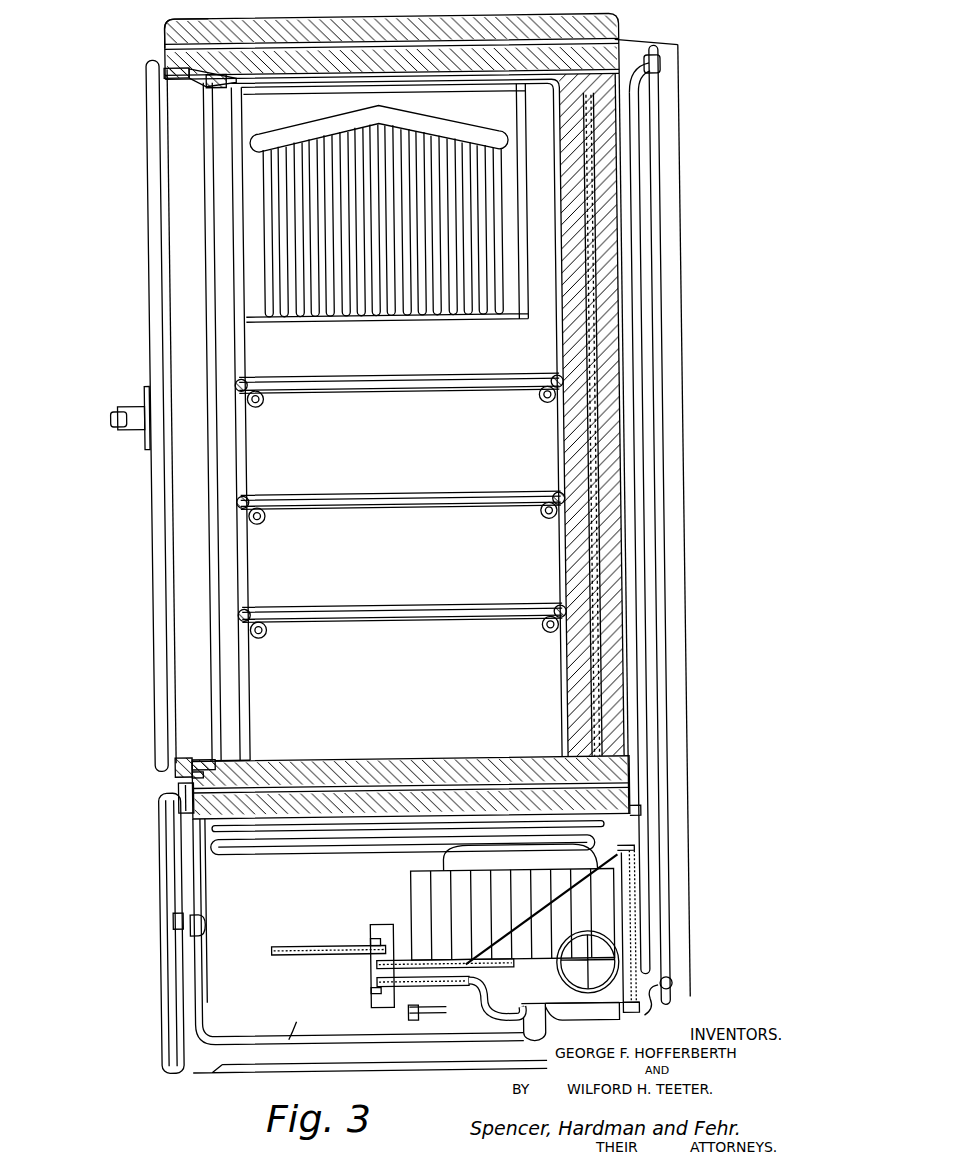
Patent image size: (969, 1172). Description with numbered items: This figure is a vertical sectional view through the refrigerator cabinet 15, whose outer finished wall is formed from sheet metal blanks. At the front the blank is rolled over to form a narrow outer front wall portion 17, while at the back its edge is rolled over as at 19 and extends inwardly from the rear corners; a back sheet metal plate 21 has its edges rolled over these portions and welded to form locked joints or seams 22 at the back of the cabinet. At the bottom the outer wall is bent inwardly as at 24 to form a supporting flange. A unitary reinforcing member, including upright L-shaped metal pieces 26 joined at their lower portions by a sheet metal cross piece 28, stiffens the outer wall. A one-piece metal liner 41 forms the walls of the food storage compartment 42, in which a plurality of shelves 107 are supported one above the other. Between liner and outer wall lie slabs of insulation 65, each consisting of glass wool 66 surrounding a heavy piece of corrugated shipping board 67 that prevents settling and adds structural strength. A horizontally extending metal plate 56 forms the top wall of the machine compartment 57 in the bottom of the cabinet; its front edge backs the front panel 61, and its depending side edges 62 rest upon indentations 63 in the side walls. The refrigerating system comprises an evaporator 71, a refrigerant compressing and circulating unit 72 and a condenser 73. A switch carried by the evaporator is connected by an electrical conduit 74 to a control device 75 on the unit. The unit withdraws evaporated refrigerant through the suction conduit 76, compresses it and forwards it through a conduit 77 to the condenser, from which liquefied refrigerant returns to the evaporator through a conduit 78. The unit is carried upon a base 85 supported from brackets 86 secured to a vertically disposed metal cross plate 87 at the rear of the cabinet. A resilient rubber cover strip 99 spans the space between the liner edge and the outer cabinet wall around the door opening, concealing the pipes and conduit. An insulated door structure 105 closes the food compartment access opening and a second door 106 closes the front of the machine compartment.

The refrigerator cabinet 15 is at (616, 413).
The narrow outer front wall portion 17 is at (171, 42).
The rolled back edge of blank 19 is at (626, 63).
The back sheet metal plate 21 is at (623, 165).
The locked joints or seams 22 is at (628, 109).
The supporting flange 24 is at (212, 1067).
The upright L-shaped metal pieces 26 is at (172, 30).
The sheet metal cross piece 28 is at (186, 803).
The one-piece metal liner 41 is at (564, 434).
The food storage compartment 42 is at (410, 456).
The horizontally extending metal plate 56 is at (246, 821).
The machine compartment 57 is at (229, 960).
The front panel 61 is at (170, 778).
The depending side edges 62 is at (289, 831).
The indentations 63 is at (343, 841).
The slabs of insulation 65 is at (609, 238).
The glass wool 66 is at (617, 575).
The corrugated shipping board 67 is at (598, 523).
The evaporator 71 is at (407, 300).
The refrigerant compressing and circulating unit 72 is at (425, 898).
The condenser 73 is at (665, 687).
The electrical conduit 74 is at (211, 77).
The control device 75 is at (390, 931).
The suction conduit 76 is at (237, 1033).
The conduit 77 is at (658, 293).
The conduit 78 is at (661, 1016).
The base 85 is at (400, 1016).
The brackets 86 is at (542, 909).
The vertically disposed metal cross plate 87 is at (628, 917).
The resilient molding member or cover strip 99 is at (196, 74).
The insulated door structure 105 is at (178, 296).
The second door 106 is at (155, 859).
The shelves 107 is at (425, 605).